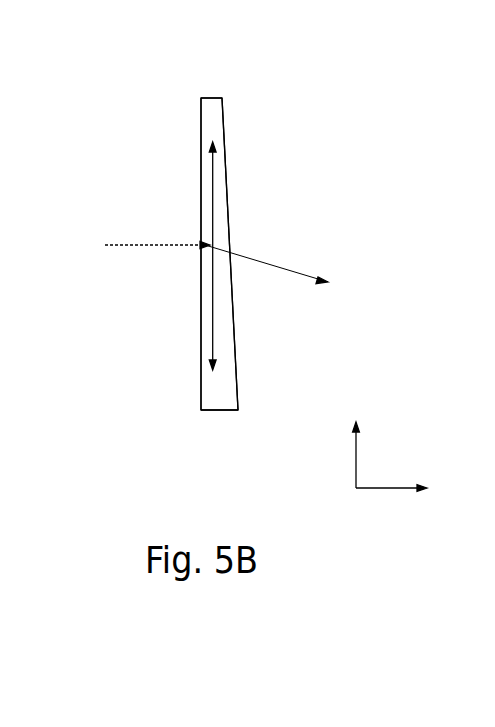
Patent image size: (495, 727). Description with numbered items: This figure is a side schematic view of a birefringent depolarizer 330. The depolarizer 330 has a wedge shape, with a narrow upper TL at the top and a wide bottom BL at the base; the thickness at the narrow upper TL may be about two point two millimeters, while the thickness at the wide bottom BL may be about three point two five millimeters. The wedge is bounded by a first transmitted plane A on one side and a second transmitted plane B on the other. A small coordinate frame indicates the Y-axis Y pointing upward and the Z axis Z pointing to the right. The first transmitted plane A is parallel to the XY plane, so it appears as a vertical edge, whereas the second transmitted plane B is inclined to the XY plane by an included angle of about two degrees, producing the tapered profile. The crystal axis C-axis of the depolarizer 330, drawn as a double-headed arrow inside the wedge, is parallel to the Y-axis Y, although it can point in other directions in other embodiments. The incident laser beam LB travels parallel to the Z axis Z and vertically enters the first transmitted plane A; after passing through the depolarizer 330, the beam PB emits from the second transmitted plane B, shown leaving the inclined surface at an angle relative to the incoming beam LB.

The birefringent depolarizer 330 is at (222, 120).
The narrow upper TL is at (210, 98).
The wide bottom BL is at (217, 410).
The first transmitted plane A is at (201, 333).
The second transmitted plane B is at (234, 333).
The crystal axis C-axis is at (213, 172).
The laser beam LB is at (150, 243).
The propagating (refracted) beam PB is at (292, 272).
The Y-axis Y is at (353, 439).
The Z axis Z is at (407, 490).